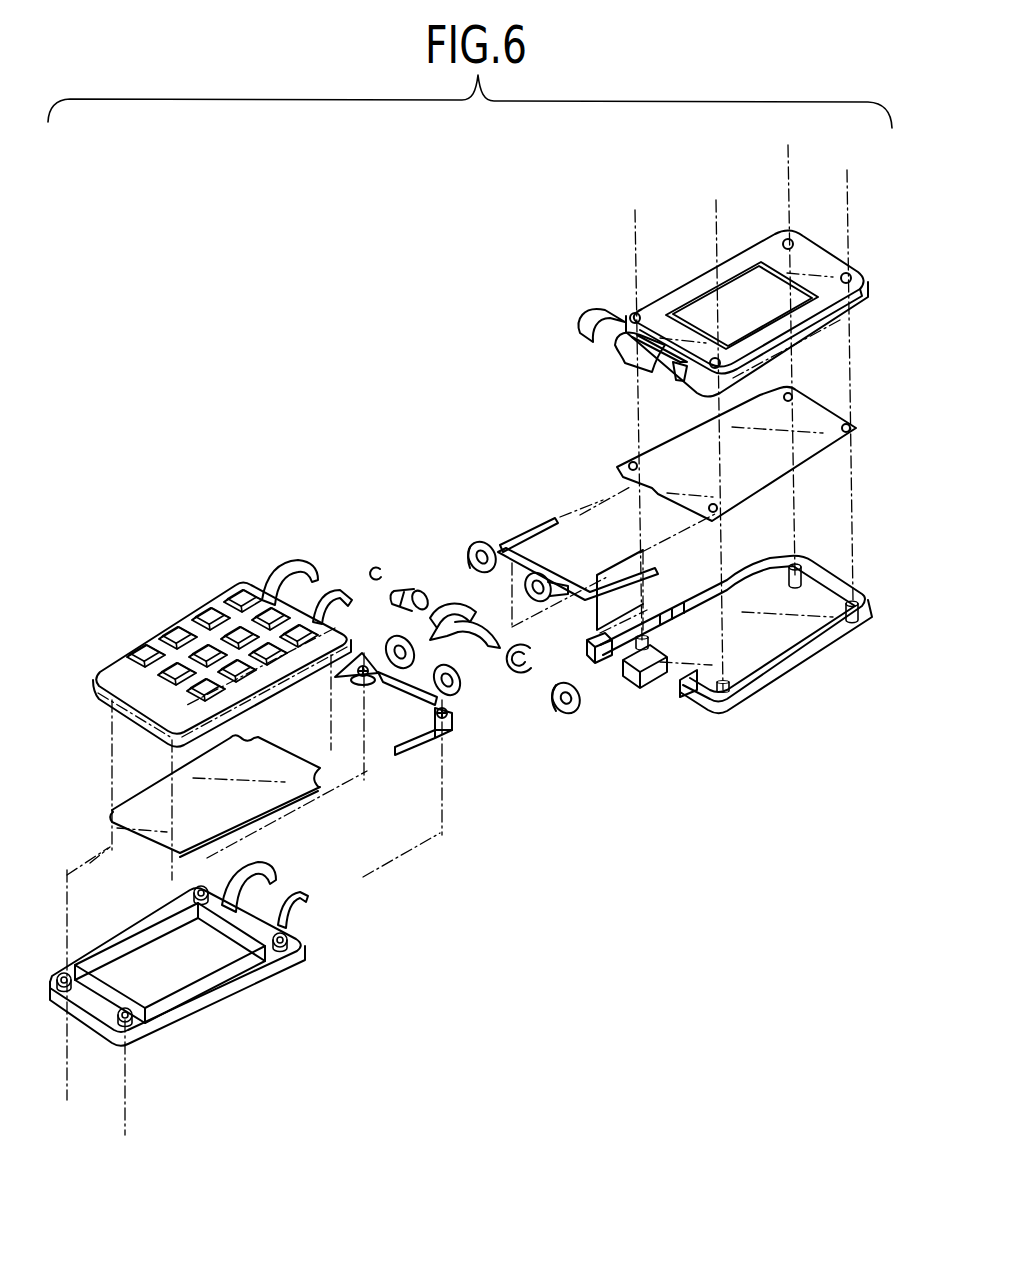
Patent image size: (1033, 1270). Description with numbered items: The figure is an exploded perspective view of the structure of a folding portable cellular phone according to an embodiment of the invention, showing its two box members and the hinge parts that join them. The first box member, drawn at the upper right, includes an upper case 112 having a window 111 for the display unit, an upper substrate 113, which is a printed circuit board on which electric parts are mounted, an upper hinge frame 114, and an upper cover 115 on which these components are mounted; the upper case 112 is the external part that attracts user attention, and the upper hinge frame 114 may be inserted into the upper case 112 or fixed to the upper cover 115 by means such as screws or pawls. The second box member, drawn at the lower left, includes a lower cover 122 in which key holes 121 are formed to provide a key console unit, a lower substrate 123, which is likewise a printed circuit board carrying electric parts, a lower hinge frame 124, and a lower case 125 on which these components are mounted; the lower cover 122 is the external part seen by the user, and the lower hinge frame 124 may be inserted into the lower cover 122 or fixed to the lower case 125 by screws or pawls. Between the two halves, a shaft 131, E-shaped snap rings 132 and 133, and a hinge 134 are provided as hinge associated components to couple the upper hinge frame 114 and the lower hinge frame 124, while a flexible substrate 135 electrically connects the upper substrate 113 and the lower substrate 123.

The window 111 is at (752, 283).
The upper case 112 is at (797, 318).
The upper substrate 113 is at (797, 453).
The upper hinge frame 114 is at (615, 592).
The upper cover 115 is at (773, 653).
The key holes 121 is at (207, 617).
The lower cover 122 is at (118, 665).
The lower substrate 123 is at (147, 802).
The lower hinge frame 124 is at (430, 753).
The lower case 125 is at (190, 1010).
The shaft 131 is at (578, 706).
The E-shaped snap ring 132 is at (515, 672).
The E-shaped snap ring 133 is at (368, 567).
The hinge 134 is at (400, 578).
The flexible substrate 135 is at (445, 602).